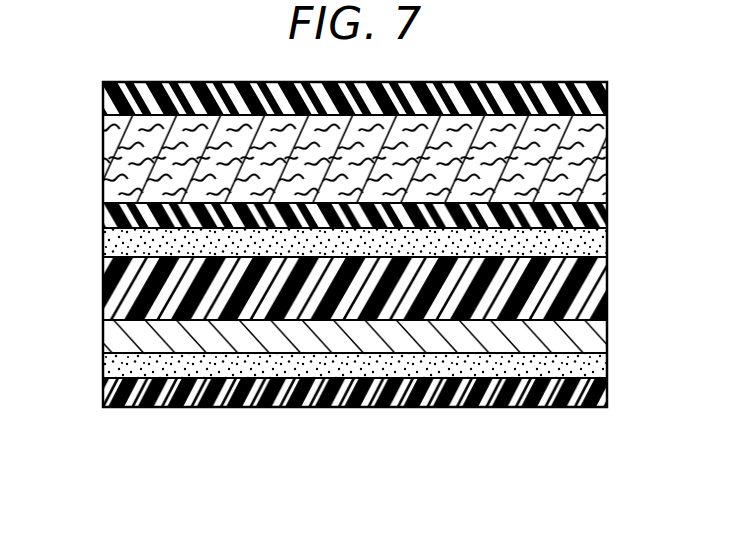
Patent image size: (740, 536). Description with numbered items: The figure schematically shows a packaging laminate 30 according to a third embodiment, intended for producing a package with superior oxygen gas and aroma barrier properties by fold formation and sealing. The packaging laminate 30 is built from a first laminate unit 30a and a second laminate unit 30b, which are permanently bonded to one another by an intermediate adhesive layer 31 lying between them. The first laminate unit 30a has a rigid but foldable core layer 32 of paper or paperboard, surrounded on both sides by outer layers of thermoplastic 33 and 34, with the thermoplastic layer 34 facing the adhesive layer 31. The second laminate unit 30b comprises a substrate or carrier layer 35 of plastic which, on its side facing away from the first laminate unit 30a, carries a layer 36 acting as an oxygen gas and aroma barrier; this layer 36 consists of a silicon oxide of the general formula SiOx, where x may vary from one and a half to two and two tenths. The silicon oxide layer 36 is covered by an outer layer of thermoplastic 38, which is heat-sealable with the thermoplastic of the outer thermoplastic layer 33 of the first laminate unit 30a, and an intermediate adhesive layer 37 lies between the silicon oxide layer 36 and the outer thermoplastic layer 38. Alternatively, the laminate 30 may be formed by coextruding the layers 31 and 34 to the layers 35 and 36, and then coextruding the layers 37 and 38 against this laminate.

The packaging laminate 30 is at (615, 62).
The first laminate unit 30a is at (614, 83).
The second laminate unit 30b is at (614, 258).
The intermediate adhesive layer 31 is at (103, 244).
The core layer 32 is at (103, 161).
The outer thermoplastic layer 33 is at (103, 96).
The thermoplastic layer 34 is at (103, 213).
The carrier layer 35 is at (103, 288).
The silicon oxide layer 36 is at (103, 335).
The intermediate adhesive layer 37 is at (103, 366).
The outer thermoplastic layer 38 is at (103, 395).